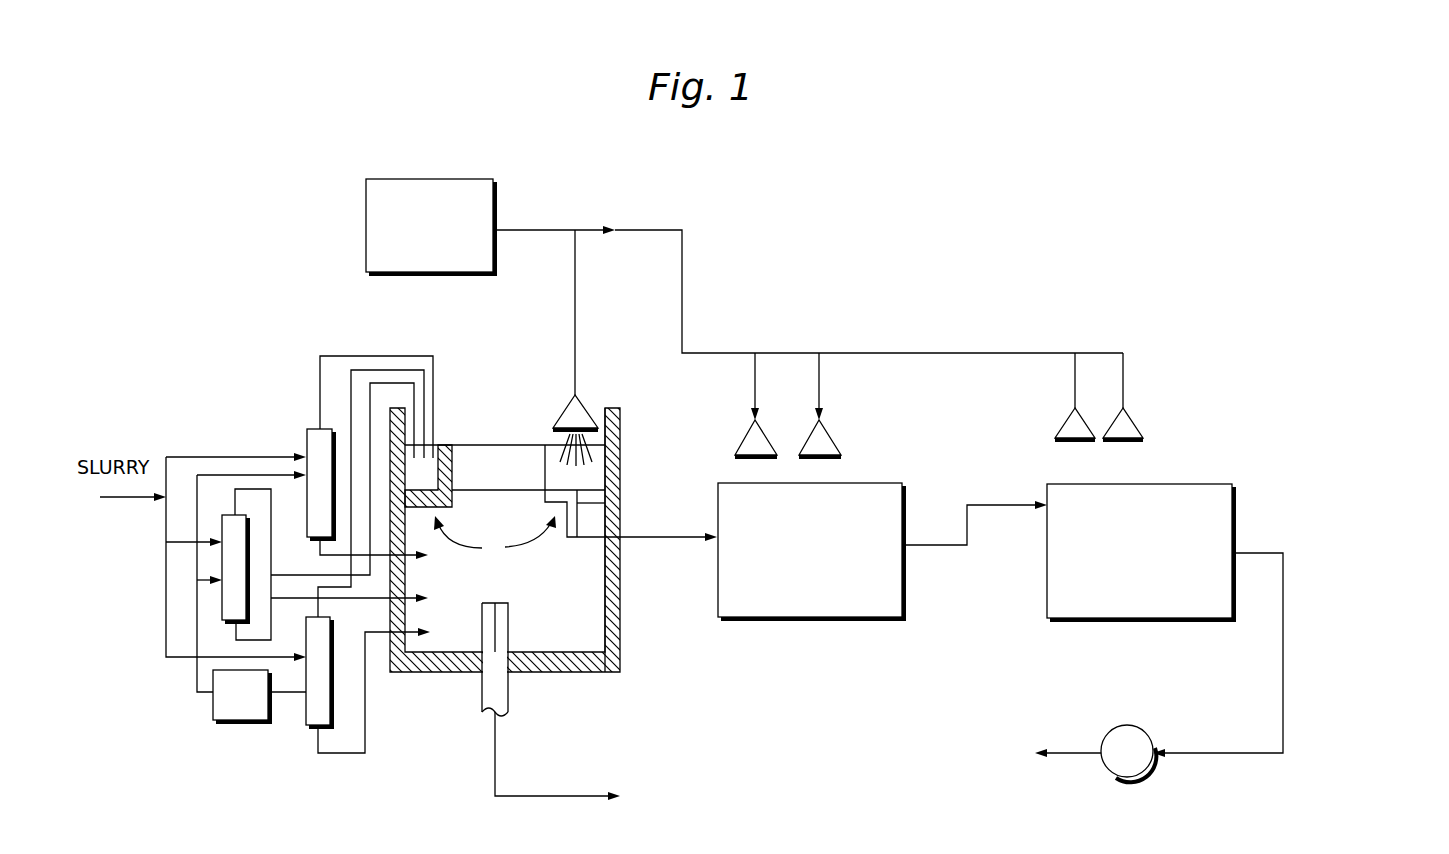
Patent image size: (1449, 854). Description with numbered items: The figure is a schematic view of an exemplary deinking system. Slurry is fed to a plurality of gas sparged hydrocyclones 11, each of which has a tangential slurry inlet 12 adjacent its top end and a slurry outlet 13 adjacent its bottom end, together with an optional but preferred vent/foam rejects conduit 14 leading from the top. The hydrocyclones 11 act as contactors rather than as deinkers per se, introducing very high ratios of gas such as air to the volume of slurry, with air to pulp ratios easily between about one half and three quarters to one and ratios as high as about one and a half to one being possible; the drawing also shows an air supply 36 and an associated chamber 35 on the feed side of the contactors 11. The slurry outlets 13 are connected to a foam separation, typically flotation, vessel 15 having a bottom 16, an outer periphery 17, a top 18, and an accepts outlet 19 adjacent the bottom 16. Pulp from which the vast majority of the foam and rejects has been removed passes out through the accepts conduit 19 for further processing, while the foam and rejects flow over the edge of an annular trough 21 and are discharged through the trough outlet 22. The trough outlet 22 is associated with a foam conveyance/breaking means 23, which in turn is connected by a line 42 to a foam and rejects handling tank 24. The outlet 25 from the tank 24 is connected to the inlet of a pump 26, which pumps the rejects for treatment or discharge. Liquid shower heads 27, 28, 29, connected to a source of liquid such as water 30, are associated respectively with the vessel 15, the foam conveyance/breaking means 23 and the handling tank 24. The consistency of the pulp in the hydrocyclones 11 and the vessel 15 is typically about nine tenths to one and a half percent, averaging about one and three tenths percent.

The gas sparged hydrocyclone 11 is at (296, 341).
The tangential slurry inlet 12 is at (307, 440).
The slurry outlet 13 is at (318, 553).
The vent/foam rejects conduit 14 is at (393, 355).
The foam separation vessel 15 is at (630, 586).
The bottom 16 is at (511, 678).
The outer periphery 17 is at (615, 487).
The top 18 is at (481, 430).
The accepts outlet 19 is at (482, 705).
The annular trough 21 is at (495, 545).
The trough outlet 22 is at (565, 525).
The foam conveyance/breaking means 23 is at (823, 620).
The foam and rejects handling tank 24 is at (1178, 483).
The outlet 25 is at (1250, 552).
The pump 26 is at (1105, 775).
The liquid shower head 27 is at (570, 398).
The liquid shower heads 28 is at (820, 423).
The liquid shower heads 29 is at (1123, 400).
The source of liquid 30 is at (461, 178).
The air mixing chamber 35 is at (297, 694).
The air supply 36 is at (208, 708).
The foam transfer line 42 is at (922, 547).